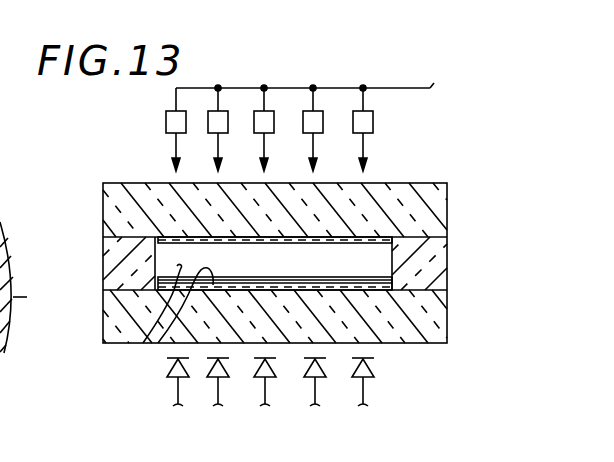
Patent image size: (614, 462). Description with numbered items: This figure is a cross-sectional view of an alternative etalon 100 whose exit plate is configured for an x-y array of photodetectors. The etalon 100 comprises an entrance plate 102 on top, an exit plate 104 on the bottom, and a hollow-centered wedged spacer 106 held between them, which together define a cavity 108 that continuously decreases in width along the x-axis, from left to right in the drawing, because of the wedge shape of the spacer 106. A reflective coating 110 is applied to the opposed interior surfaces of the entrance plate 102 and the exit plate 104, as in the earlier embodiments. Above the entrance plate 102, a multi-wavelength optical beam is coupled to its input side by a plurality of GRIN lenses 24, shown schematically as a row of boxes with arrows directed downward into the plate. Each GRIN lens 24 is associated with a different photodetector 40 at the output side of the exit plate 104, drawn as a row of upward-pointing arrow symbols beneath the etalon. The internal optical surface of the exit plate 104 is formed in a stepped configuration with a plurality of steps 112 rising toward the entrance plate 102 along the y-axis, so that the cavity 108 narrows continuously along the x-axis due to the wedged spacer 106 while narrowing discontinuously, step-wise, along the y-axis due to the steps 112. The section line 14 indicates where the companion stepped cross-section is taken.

The section line 14 is at (103, 267).
The GRIN lenses 24 is at (166, 118).
The photodetector 40 is at (0, 225).
The etalon 100 is at (446, 168).
The entrance plate 102 is at (447, 204).
The exit plate 104 is at (105, 346).
The hollow-centered wedged spacer 106 is at (447, 252).
The cavity 108 is at (143, 343).
The reflective coating 110 is at (357, 244).
The steps 112 is at (158, 343).